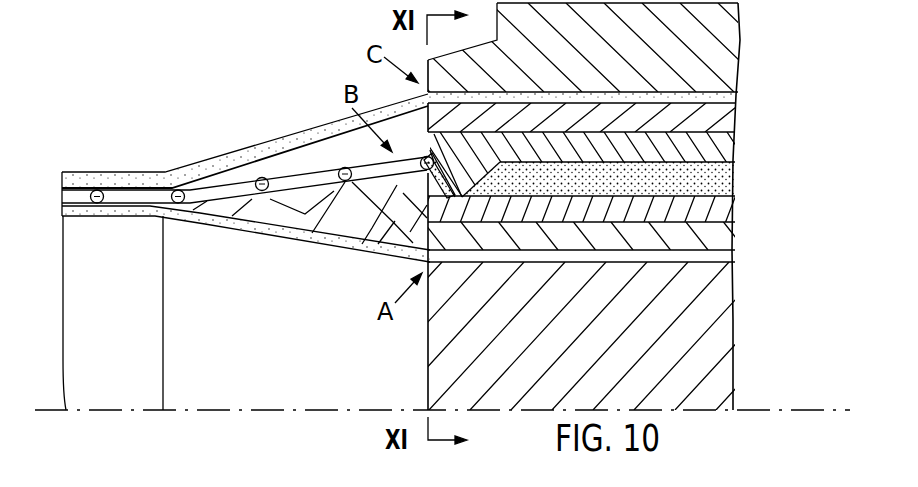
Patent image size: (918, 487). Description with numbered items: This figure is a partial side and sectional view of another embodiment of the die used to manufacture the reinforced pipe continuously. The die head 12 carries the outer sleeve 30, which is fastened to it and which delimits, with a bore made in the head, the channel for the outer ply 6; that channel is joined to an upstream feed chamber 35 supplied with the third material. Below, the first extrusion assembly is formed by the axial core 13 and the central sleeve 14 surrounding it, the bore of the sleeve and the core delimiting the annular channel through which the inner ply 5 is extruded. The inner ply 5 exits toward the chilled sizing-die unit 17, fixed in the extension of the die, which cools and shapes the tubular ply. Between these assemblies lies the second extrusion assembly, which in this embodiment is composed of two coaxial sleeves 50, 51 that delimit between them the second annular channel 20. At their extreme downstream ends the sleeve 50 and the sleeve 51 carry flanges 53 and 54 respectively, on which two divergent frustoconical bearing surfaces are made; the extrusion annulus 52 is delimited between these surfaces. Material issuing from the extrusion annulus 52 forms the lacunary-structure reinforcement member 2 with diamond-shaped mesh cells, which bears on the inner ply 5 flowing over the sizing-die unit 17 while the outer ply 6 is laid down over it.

The lacunary-structure reinforcement member 2 is at (62, 197).
The inner ply 5 is at (121, 212).
The outer ply 6 is at (141, 178).
The die head 12 is at (695, 42).
The axial core 13 is at (705, 313).
The central sleeve 14 is at (713, 224).
The chilled sizing-die unit 17 is at (122, 368).
The second annular channel 20 is at (718, 180).
The outer sleeve 30 is at (722, 118).
The upstream feed chamber 35 is at (737, 100).
The sleeve 50 is at (718, 145).
The sleeve 51 is at (720, 210).
The extrusion annulus 52 is at (500, 162).
The downstream flange 53 is at (421, 156).
The downstream flange 54 is at (407, 228).